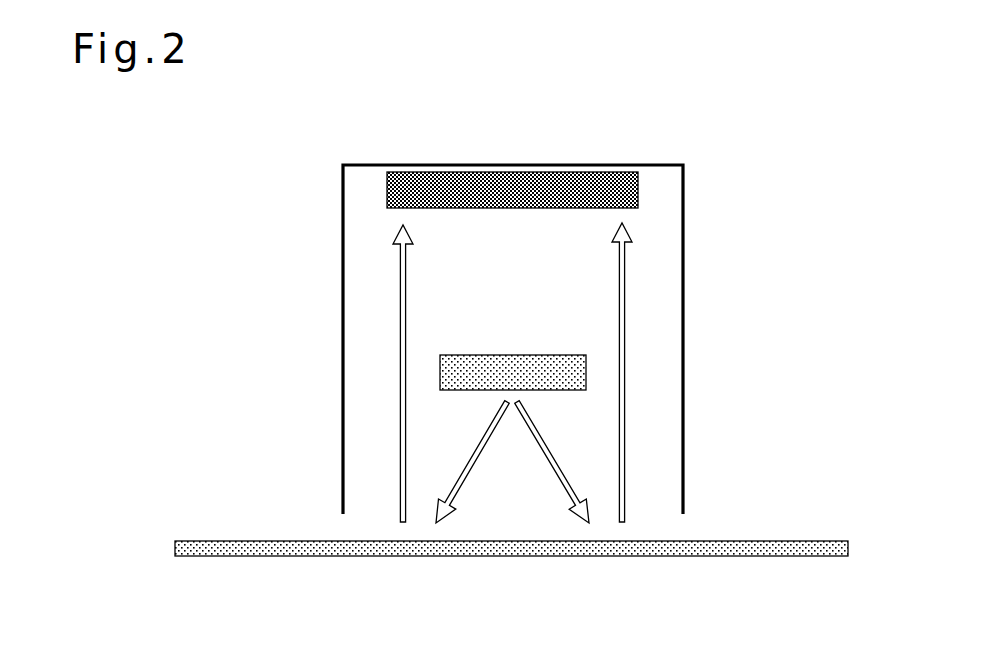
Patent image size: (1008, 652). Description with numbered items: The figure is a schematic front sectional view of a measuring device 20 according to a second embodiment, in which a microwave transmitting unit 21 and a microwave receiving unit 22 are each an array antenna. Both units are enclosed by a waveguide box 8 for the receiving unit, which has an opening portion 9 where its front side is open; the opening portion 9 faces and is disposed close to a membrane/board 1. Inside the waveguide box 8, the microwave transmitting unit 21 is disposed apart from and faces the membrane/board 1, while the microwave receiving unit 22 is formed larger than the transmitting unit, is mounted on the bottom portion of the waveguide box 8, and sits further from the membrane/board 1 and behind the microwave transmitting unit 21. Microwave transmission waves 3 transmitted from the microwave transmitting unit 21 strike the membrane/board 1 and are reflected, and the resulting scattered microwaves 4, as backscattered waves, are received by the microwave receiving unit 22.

The measuring device 20 is at (258, 221).
The waveguide box for the receiving unit 8 is at (685, 227).
The microwave receiving unit 22 is at (561, 172).
The microwave transmitting unit 21 is at (542, 355).
The scattered microwaves 4 is at (400, 366).
The microwave transmission waves 3 is at (475, 455).
The membrane/board 1 is at (765, 540).
The opening portion 9 is at (652, 520).